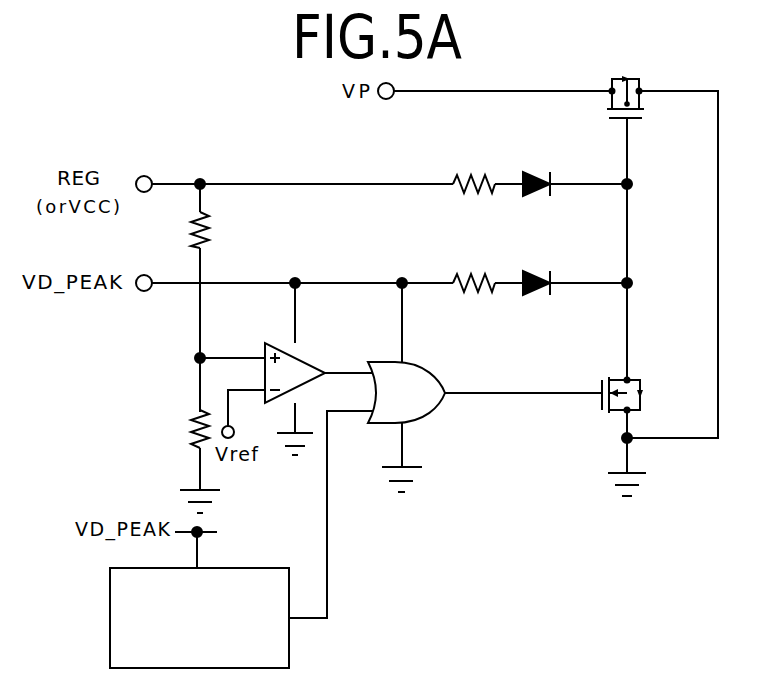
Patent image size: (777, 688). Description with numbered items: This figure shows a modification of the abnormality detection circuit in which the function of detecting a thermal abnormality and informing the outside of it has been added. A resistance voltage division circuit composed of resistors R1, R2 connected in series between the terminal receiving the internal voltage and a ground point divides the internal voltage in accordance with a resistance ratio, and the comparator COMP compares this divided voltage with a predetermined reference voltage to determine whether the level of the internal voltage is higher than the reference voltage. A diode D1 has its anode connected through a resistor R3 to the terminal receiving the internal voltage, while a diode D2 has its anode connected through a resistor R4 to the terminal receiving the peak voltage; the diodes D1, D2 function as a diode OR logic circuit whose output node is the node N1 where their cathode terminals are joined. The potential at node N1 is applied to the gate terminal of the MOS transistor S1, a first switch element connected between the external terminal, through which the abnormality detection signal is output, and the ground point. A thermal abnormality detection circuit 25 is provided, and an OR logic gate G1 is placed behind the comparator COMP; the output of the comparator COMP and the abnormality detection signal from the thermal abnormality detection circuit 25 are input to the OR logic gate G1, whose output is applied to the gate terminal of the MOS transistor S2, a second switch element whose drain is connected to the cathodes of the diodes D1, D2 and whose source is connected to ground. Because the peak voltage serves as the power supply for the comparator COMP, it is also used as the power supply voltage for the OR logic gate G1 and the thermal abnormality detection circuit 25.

The thermal abnormality detection circuit 25 is at (110, 600).
The MOS transistor (first switch element) S1 is at (619, 86).
The MOS transistor (second switch element) S2 is at (636, 430).
The resistor R1 is at (187, 216).
The resistor R2 is at (184, 429).
The resistor R3 is at (474, 169).
The resistor R4 is at (474, 268).
The diode D1 is at (536, 171).
The diode D2 is at (536, 270).
The node N1 is at (631, 188).
The OR logic gate G1 is at (430, 373).
The comparator COMP is at (302, 360).